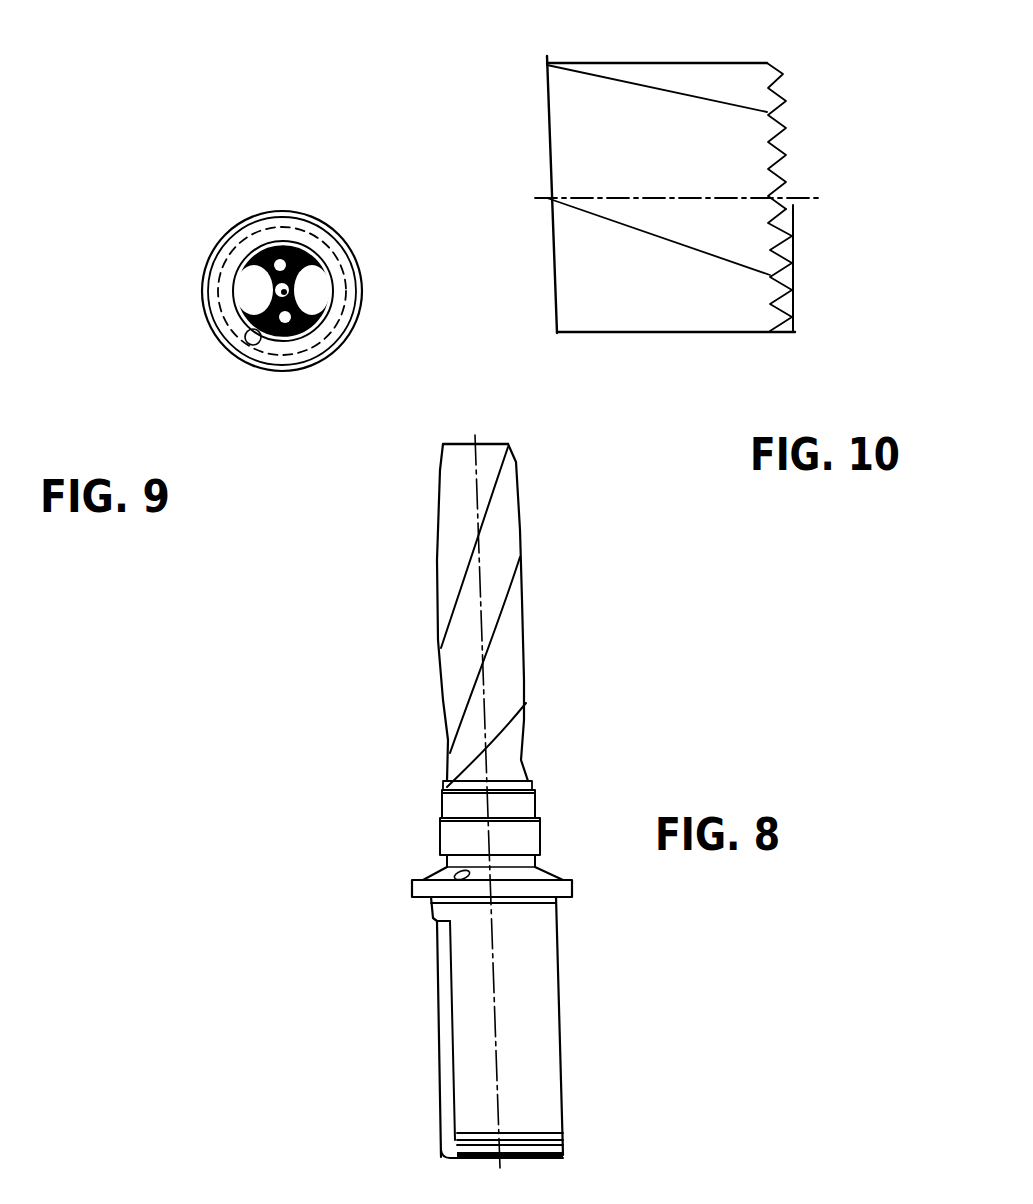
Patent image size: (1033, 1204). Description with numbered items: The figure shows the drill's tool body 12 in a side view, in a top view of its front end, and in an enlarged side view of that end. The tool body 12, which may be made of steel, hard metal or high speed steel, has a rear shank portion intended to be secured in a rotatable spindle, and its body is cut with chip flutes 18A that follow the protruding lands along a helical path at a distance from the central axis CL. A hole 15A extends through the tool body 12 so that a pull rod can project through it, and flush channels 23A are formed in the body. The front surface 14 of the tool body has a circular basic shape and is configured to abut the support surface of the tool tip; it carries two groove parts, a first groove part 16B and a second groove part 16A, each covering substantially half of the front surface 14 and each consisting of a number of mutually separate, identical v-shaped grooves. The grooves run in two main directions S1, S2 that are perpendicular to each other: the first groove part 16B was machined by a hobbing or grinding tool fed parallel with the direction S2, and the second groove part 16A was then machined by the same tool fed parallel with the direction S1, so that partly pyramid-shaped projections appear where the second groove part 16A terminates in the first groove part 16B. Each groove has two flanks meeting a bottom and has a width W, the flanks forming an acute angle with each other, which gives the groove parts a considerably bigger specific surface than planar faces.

In FIG. 9, the tool body 12 is at (280, 190).
In FIG. 10, the tool body 12 is at (628, 358).
In FIG. 8, the tool body 12 is at (548, 631).
In FIG. 8, the front surface 14 is at (460, 430).
In FIG. 9, the hole 15A is at (292, 293).
In FIG. 9, the second groove part 16A is at (300, 318).
In FIG. 10, the second groove part 16A is at (806, 294).
In FIG. 9, the first groove part 16B is at (310, 252).
In FIG. 10, the first groove part 16B is at (796, 113).
In FIG. 8, the chip flutes 18A is at (465, 625).
In FIG. 9, the flush channels 23A is at (270, 330).
In FIG. 9, the main direction S1 is at (287, 327).
In FIG. 9, the main direction S2 is at (278, 262).
In FIG. 10, the central axis CL is at (547, 198).
In FIG. 8, the central axis CL is at (500, 1097).
In FIG. 10, the width W is at (787, 173).